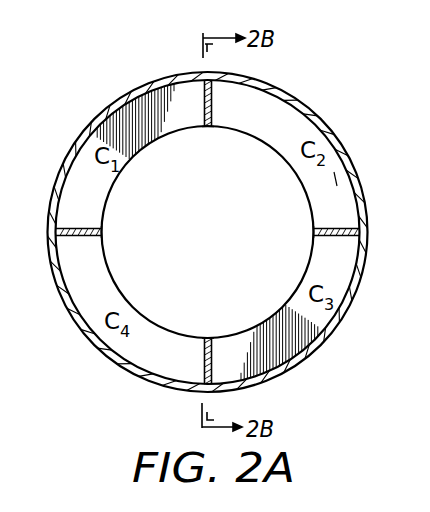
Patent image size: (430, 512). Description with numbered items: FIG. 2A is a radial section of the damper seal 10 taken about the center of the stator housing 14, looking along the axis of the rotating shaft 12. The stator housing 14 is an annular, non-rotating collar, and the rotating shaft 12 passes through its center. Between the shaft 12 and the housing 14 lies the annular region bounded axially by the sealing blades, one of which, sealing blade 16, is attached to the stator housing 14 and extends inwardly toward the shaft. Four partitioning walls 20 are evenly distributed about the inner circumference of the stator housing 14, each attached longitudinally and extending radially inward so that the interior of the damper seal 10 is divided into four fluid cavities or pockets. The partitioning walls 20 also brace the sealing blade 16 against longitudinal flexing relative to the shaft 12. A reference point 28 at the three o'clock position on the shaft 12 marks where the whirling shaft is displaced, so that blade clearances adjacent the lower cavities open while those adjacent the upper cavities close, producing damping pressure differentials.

The damper seal 10 is at (106, 86).
The rotating shaft 12 is at (225, 240).
The stator housing 14 is at (291, 95).
The sealing blade 16 is at (338, 180).
The partitioning walls 20 is at (204, 112).
The reference point 28 is at (316, 236).